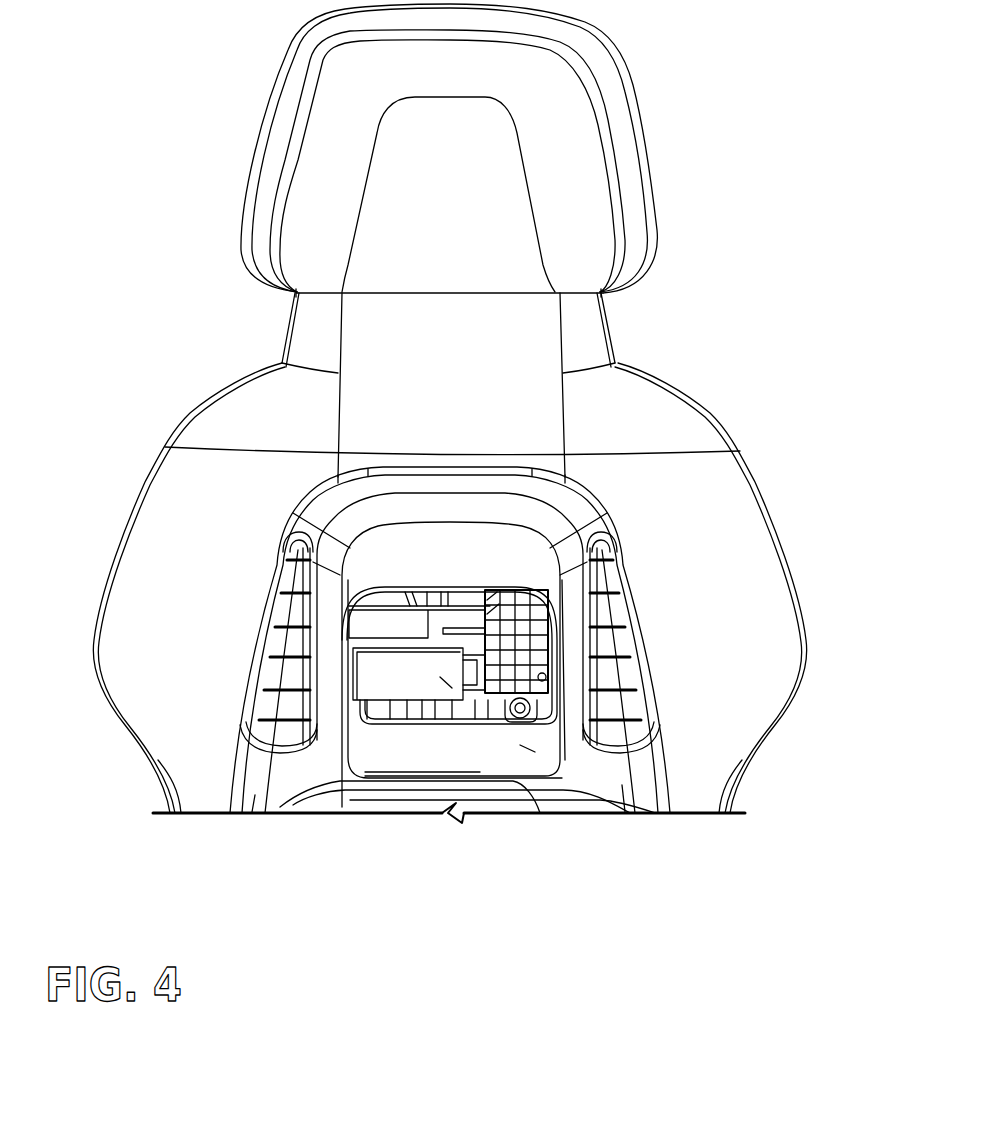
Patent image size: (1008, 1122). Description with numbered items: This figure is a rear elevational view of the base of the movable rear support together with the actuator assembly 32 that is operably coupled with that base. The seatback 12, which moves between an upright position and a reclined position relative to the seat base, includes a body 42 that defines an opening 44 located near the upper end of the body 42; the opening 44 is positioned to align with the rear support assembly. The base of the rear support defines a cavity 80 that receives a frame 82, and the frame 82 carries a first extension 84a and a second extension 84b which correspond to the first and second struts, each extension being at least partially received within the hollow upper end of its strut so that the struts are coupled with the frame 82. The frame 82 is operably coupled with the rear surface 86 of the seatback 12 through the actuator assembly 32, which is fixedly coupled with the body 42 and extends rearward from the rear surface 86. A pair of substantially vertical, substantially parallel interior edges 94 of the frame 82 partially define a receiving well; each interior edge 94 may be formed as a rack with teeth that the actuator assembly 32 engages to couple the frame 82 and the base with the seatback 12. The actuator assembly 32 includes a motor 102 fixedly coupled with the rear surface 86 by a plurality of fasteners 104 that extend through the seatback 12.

The seatback 12 is at (723, 512).
The body 42 is at (510, 443).
The frame 82 is at (570, 507).
The interior edges 94 is at (342, 668).
The opening 44 is at (353, 712).
The fasteners 104 is at (522, 708).
The first extension 84a is at (623, 785).
The second extension 84b is at (255, 795).
The actuator assembly 32 is at (373, 735).
The cavity 80 is at (472, 777).
The motor 102 is at (440, 677).
The rear surface 86 is at (527, 750).